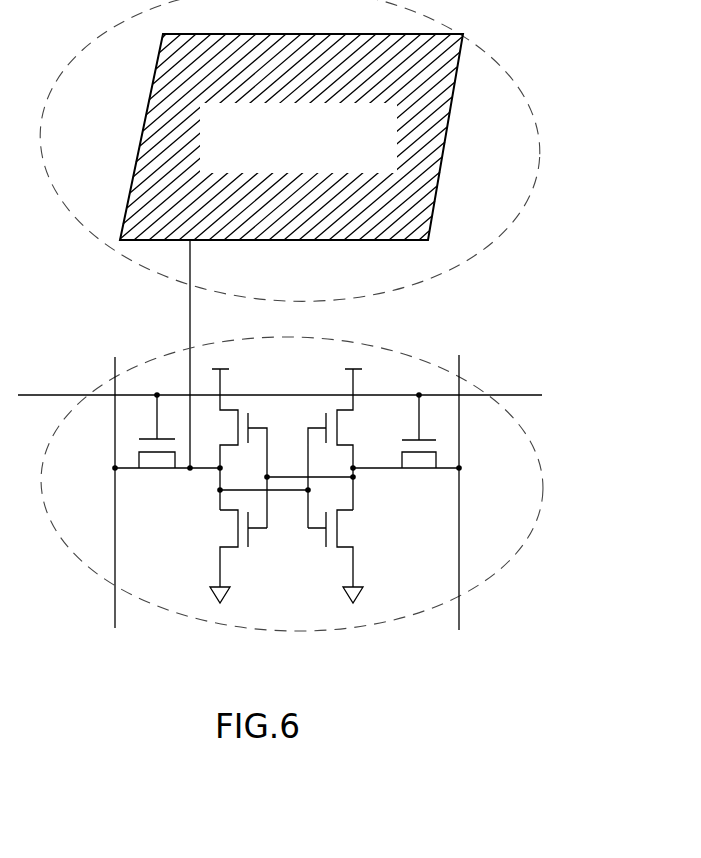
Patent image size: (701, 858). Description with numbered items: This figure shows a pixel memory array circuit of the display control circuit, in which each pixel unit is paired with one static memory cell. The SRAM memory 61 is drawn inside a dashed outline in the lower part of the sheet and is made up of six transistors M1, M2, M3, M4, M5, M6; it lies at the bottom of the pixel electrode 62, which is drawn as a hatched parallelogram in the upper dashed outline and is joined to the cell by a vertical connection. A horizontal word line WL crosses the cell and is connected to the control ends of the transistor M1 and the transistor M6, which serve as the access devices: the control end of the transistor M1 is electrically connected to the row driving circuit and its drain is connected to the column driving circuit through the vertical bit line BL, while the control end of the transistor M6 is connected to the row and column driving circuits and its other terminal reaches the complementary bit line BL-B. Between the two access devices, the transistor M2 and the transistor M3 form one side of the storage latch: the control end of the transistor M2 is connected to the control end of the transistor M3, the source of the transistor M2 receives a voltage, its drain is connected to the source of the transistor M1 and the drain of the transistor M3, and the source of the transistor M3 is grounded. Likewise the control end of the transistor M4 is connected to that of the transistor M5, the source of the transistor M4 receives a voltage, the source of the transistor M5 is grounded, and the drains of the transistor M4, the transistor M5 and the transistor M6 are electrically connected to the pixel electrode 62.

The SRAM memory 61 is at (282, 483).
The pixel electrode 62 is at (290, 157).
The transistor M1 is at (167, 450).
The transistor M2 is at (234, 448).
The transistor M3 is at (230, 556).
The transistor M4 is at (346, 448).
The transistor M5 is at (345, 556).
The transistor M6 is at (406, 447).
The word line WL is at (280, 382).
The bit line BL is at (132, 492).
The complementary bit line BL-B is at (430, 492).